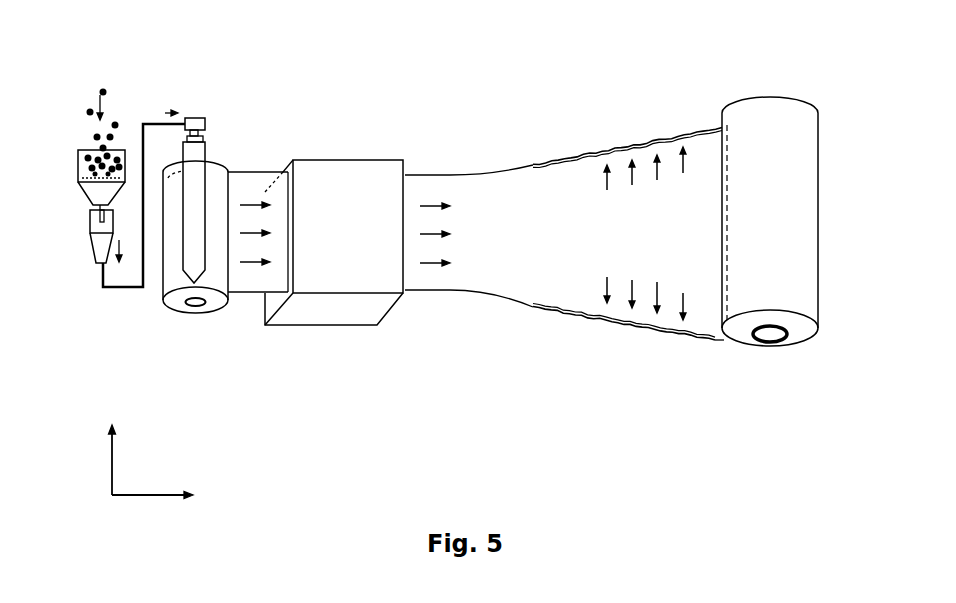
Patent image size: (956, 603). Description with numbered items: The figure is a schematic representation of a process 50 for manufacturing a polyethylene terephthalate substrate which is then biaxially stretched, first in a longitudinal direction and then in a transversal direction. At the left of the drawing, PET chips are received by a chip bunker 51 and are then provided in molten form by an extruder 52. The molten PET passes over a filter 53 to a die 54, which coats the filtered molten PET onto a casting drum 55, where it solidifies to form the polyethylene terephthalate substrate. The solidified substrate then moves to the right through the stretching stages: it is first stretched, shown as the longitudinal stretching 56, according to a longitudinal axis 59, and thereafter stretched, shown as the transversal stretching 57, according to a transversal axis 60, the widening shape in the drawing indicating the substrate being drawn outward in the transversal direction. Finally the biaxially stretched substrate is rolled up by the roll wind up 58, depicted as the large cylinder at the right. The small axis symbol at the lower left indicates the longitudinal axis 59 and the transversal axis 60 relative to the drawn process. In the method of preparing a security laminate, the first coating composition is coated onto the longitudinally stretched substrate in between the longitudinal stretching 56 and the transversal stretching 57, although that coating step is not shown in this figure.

The process 50 is at (407, 100).
The chip bunker 51 is at (92, 167).
The extruder 52 is at (98, 243).
The filter 53 is at (197, 120).
The die 54 is at (197, 152).
The casting drum 55 is at (165, 300).
The longitudinal stretching 56 is at (330, 252).
The transversal stretching 57 is at (607, 170).
The roll wind up 58 is at (753, 272).
The longitudinal axis 59 is at (153, 508).
The transversal axis 60 is at (97, 459).